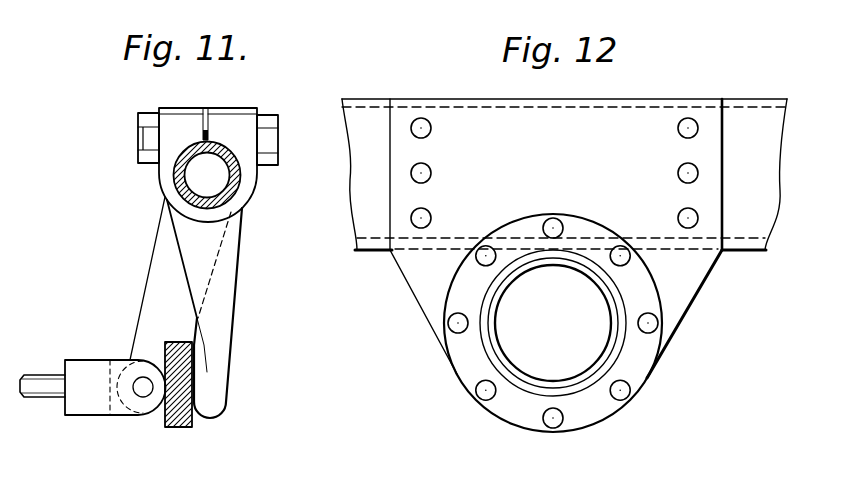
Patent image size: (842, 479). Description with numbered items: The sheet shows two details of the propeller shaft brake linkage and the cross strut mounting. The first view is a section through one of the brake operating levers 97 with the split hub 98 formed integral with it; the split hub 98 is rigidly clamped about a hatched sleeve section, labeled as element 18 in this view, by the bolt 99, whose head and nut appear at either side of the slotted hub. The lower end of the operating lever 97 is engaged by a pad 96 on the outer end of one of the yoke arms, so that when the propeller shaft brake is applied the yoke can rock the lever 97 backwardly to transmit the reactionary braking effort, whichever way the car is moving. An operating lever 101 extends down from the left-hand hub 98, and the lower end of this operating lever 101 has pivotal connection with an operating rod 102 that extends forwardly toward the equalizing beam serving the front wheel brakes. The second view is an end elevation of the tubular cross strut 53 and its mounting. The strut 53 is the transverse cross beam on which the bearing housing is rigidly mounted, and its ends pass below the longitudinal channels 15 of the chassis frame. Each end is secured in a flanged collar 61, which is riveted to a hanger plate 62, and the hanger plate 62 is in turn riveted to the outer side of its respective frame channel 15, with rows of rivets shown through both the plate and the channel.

In FIG. 12, the longitudinal channel 15 is at (370, 112).
In FIG. 12, the hanger plate 62 is at (417, 267).
In FIG. 12, the flanged collar 61 is at (467, 358).
In FIG. 12, the tubular strut 53 is at (602, 360).
In FIG. 11, the bolt 99 is at (143, 128).
In FIG. 11, the split hub 98 is at (165, 182).
In FIG. 11, the shaft bushing 18 is at (179, 190).
In FIG. 11, the operating lever 101 is at (158, 290).
In FIG. 11, the brake operating lever 97 is at (223, 330).
In FIG. 11, the operating rod 102 is at (42, 383).
In FIG. 11, the pad 96 is at (182, 428).